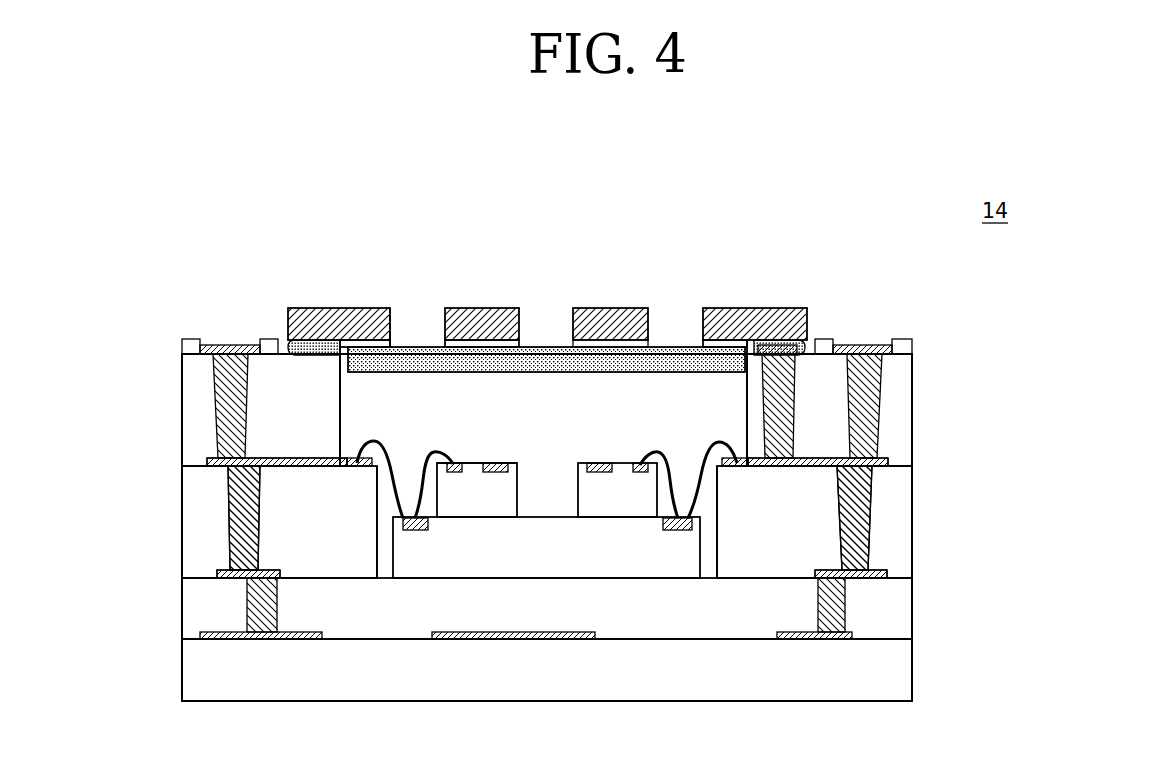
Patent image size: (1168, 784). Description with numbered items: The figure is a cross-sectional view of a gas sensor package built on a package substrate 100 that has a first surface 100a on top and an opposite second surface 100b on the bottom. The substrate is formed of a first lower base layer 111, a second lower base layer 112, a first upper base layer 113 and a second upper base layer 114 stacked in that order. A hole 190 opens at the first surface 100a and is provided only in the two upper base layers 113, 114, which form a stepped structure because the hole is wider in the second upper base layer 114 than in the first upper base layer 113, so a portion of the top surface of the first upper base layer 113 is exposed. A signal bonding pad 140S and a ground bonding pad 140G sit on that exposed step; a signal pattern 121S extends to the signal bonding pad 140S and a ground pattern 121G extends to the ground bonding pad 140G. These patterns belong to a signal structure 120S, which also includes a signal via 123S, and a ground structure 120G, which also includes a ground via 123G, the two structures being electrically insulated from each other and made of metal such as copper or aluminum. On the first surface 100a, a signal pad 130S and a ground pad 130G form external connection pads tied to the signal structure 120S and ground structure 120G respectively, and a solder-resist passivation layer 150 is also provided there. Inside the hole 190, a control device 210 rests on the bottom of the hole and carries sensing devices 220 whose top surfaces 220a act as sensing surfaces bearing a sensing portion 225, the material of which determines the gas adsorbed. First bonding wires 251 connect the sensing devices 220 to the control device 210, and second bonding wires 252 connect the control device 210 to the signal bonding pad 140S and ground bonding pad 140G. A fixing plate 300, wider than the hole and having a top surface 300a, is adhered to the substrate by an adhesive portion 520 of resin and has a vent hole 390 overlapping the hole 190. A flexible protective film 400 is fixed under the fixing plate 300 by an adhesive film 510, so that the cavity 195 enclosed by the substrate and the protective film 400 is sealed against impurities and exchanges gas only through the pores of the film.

The package substrate 100 is at (917, 354).
The first surface 100a is at (183, 341).
The second surface 100b is at (197, 702).
The first lower base layer 111 is at (900, 670).
The second lower base layer 112 is at (900, 610).
The first upper base layer 113 is at (900, 554).
The second upper base layer 114 is at (900, 410).
The signal structure 120S is at (80, 448).
The signal pattern 121S is at (207, 461).
The signal via 123S is at (237, 503).
The ground structure 120G is at (1018, 450).
The ground pattern 121G is at (887, 460).
The ground via 123G is at (862, 508).
The signal pad 130S is at (225, 347).
The ground pad 130G is at (855, 345).
The signal bonding pad 140S is at (362, 467).
The ground bonding pad 140G is at (735, 467).
The passivation layer 150 is at (900, 340).
The hole 190 is at (748, 407).
The cavity 195 is at (614, 408).
The control device 210 is at (615, 557).
The sensing device 220 is at (452, 503).
The top surface 220a is at (513, 458).
The sensing portion 225 is at (498, 472).
The first bonding wires 251 is at (437, 448).
The second bonding wires 252 is at (375, 440).
The fixing plate 300 is at (787, 317).
The top surface 300a is at (302, 308).
The vent hole 390 is at (401, 333).
The protective film 400 is at (542, 353).
The adhesive film 510 is at (710, 343).
The adhesive portion 520 is at (318, 347).